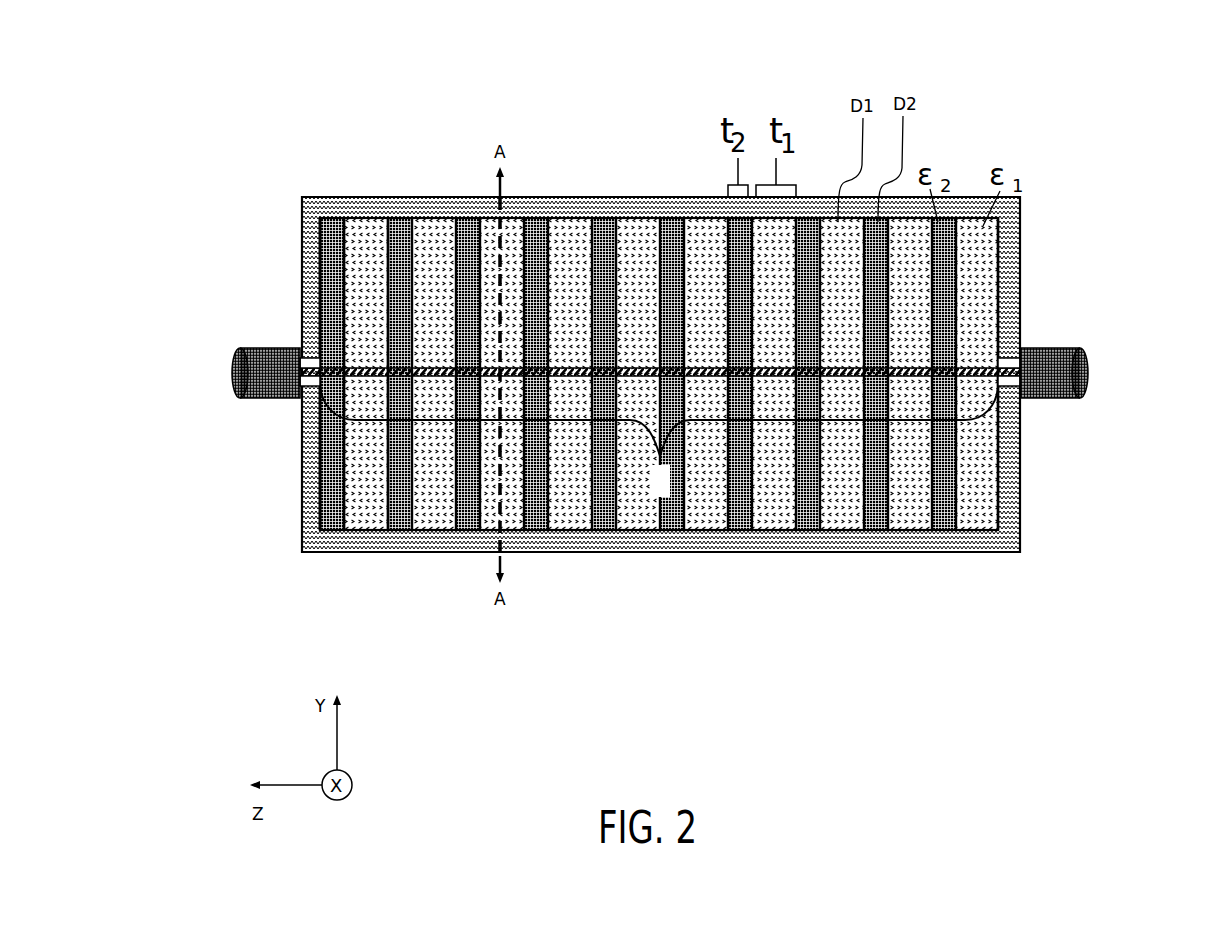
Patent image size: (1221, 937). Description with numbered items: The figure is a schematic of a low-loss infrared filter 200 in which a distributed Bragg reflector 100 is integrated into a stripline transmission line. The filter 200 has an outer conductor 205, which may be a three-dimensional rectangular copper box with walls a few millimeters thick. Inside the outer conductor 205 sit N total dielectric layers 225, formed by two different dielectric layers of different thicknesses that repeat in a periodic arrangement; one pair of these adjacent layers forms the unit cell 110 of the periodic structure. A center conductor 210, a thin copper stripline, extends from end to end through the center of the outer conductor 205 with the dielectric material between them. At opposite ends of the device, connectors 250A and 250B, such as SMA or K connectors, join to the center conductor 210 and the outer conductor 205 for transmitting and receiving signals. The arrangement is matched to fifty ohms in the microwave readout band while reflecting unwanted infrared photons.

The low-loss infrared filter 200 is at (557, 54).
The outer conductor 205 is at (563, 190).
The center conductor 210 is at (368, 366).
The unit cell 110 is at (388, 196).
The dielectric layers 225 is at (1000, 600).
The connector 250A is at (1032, 348).
The connector 250B is at (260, 350).
The distributed Bragg reflector 100 is at (1035, 219).